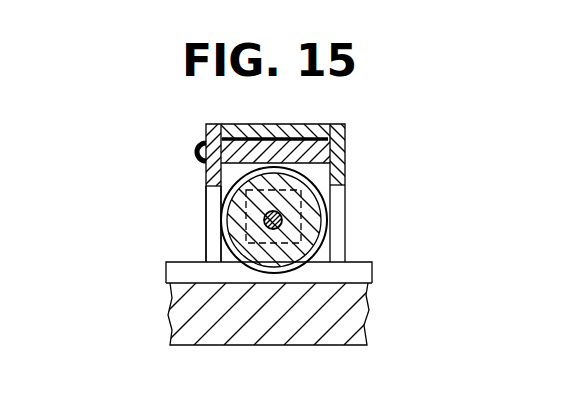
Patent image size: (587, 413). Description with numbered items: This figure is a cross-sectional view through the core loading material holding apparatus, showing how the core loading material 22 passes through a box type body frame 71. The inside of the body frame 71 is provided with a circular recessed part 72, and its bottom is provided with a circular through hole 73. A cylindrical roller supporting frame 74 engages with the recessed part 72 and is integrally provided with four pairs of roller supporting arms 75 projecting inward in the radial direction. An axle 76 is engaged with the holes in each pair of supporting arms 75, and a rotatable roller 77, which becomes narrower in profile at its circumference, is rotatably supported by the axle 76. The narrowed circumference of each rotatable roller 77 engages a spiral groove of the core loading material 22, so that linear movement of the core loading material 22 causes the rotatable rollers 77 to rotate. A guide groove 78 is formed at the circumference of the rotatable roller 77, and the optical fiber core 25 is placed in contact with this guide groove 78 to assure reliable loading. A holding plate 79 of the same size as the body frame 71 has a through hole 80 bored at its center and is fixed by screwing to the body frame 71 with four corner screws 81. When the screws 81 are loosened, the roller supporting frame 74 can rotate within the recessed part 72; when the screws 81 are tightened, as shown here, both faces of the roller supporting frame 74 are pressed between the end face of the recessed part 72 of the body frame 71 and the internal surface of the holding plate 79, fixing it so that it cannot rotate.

The core loading material 22 is at (352, 319).
The optical fiber core 25 is at (360, 275).
The body frame 71 is at (341, 123).
The recessed part 72 is at (262, 137).
The through hole 73 is at (337, 208).
The roller supporting frame 74 is at (338, 152).
The roller supporting arms 75 is at (328, 176).
The axle 76 is at (265, 224).
The rotatable roller 77 is at (282, 226).
The guide groove 78 is at (365, 268).
The holding plate 79 is at (209, 181).
The through hole 80 is at (216, 211).
The screws 81 is at (193, 146).